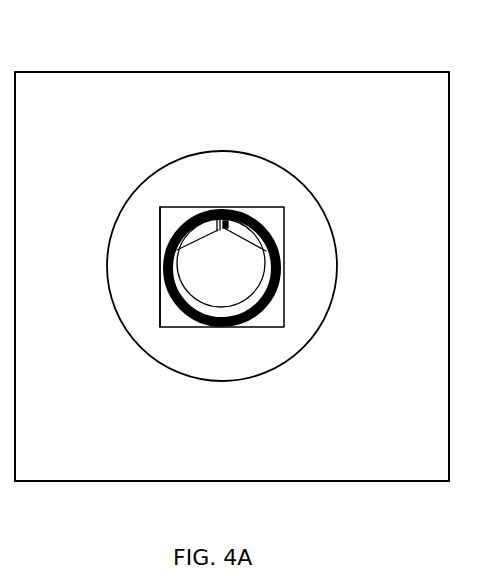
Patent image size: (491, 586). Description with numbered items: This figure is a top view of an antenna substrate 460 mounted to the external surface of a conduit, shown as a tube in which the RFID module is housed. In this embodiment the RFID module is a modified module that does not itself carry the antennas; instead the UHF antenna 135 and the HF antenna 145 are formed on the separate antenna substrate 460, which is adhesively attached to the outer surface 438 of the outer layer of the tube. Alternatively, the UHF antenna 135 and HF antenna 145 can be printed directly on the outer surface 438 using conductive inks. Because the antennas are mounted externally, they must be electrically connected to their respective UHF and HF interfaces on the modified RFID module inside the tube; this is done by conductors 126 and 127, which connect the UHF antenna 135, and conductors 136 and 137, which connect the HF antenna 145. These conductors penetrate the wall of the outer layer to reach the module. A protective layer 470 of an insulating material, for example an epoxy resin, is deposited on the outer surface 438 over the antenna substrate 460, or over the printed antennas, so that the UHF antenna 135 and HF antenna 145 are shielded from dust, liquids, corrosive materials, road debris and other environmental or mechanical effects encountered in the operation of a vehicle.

The outer surface 438 is at (97, 97).
The protective layer 470 is at (237, 154).
The antenna substrate 460 is at (284, 207).
The HF antenna 145 is at (160, 238).
The conductor 136 is at (266, 251).
The UHF antenna 135 is at (227, 307).
The conductor 137 is at (270, 233).
The conductor 126 is at (216, 231).
The conductor 127 is at (220, 230).